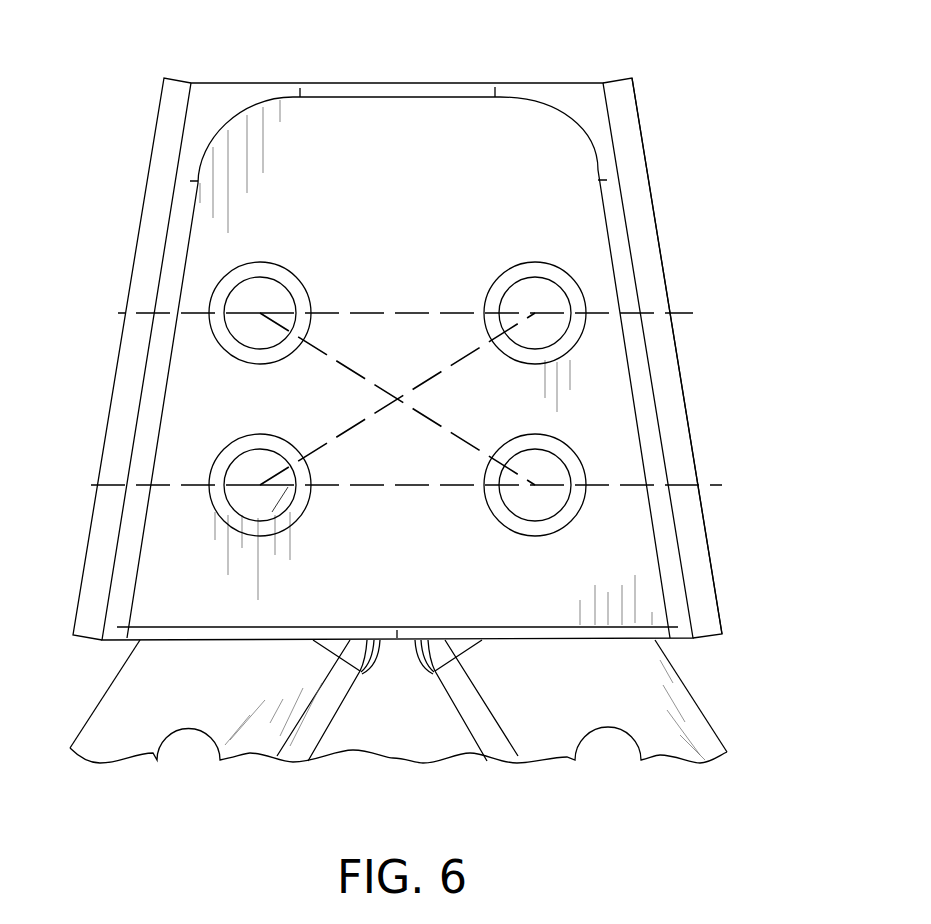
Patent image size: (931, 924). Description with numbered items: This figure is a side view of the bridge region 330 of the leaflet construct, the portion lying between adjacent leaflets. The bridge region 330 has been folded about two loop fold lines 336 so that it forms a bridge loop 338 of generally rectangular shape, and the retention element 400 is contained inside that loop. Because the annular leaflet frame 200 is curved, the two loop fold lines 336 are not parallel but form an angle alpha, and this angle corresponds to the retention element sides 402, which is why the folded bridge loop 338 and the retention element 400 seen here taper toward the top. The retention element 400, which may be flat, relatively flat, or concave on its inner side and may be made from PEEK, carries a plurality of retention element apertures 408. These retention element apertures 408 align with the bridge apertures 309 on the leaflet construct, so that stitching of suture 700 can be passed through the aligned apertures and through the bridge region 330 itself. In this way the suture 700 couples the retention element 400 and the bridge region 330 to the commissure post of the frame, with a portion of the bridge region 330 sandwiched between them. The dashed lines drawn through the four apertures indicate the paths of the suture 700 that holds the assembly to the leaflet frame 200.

The bridge region 330 is at (542, 82).
The loop fold lines 336 is at (640, 125).
The retention element 400 is at (602, 203).
The retention element sides 402 is at (607, 243).
The suture 700 is at (684, 313).
The bridge apertures 309 is at (553, 435).
The retention element apertures 408 is at (560, 460).
The bridge loop 338 is at (724, 575).
The leaflet frame 200 is at (683, 680).